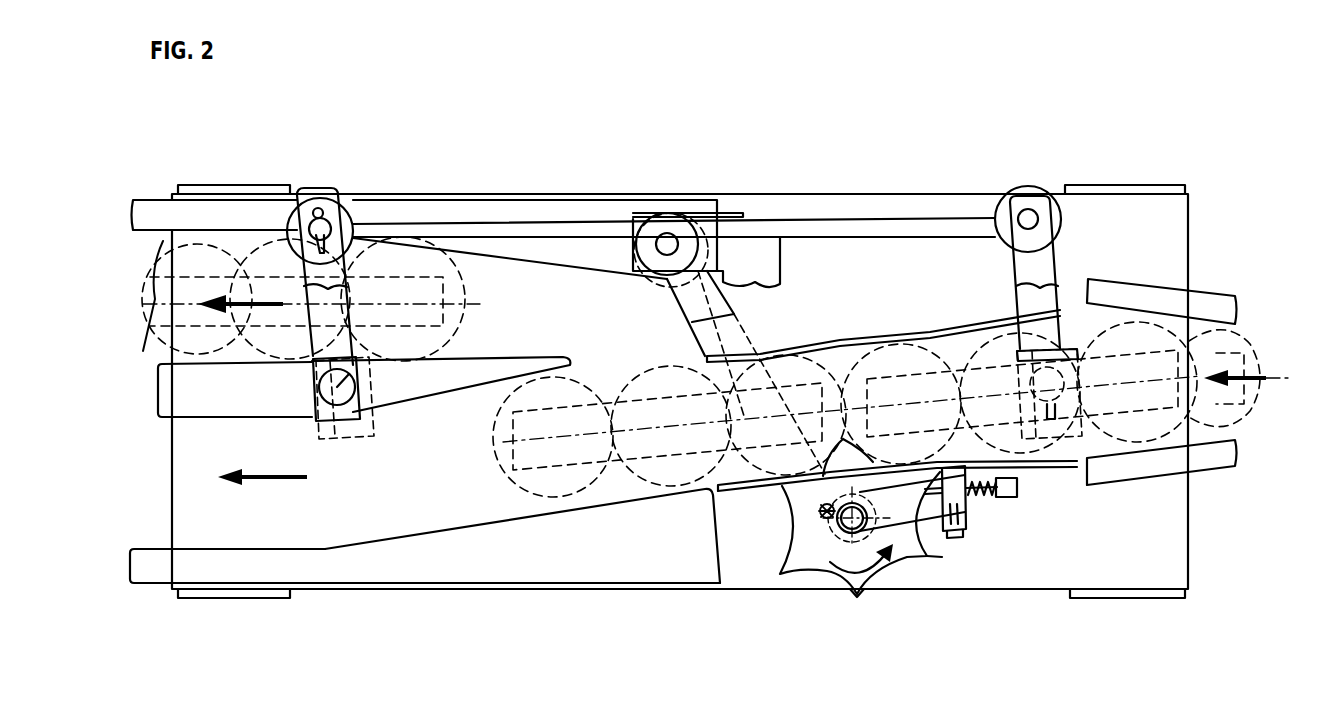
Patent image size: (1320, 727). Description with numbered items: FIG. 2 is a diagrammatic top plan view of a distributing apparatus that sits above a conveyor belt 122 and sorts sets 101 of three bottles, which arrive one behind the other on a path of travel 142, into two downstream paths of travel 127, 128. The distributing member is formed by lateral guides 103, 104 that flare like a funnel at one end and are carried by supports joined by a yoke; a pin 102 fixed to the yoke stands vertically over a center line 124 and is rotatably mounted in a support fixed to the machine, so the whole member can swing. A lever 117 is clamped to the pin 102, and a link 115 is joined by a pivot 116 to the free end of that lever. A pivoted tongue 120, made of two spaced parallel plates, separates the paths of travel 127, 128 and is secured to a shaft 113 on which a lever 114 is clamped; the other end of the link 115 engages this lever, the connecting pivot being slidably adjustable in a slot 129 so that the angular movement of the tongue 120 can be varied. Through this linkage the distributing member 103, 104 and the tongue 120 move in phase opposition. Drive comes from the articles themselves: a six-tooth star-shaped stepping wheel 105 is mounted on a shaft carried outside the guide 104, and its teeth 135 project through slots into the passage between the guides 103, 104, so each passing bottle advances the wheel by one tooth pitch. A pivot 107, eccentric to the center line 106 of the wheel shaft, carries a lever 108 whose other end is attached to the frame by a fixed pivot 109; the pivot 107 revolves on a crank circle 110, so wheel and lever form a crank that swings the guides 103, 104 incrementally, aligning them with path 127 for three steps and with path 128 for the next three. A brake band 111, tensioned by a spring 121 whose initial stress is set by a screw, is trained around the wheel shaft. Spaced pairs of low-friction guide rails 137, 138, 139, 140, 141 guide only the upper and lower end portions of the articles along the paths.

The sets 101 is at (570, 450).
The pin 102 is at (1062, 365).
The lateral guide 103 is at (787, 357).
The lateral guide 104 is at (737, 492).
The star-shaped stepping wheel 105 is at (842, 545).
The center line 106 is at (857, 530).
The pivot 107 is at (780, 577).
The lever 108 is at (722, 330).
The pivot 109 is at (667, 240).
The crank circle 110 is at (826, 517).
The brake band 111 is at (943, 534).
The shaft 113 is at (333, 392).
The lever 114 is at (313, 365).
The link 115 is at (428, 236).
The pivot 116 is at (1028, 212).
The lever 117 is at (1052, 305).
The pivoted tongue 120 is at (407, 387).
The spring 121 is at (1077, 598).
The conveyor belt 122 is at (1000, 498).
The center line 124 is at (1010, 368).
The path of travel 127 is at (192, 302).
The path of travel 128 is at (208, 493).
The slot 129 is at (318, 228).
The teeth 135 is at (857, 600).
The guide 137 is at (173, 407).
The guide 138 is at (145, 567).
The guide 139 is at (157, 224).
The guide 140 is at (1132, 467).
The guide 141 is at (1187, 301).
The path of travel 142 is at (1252, 388).